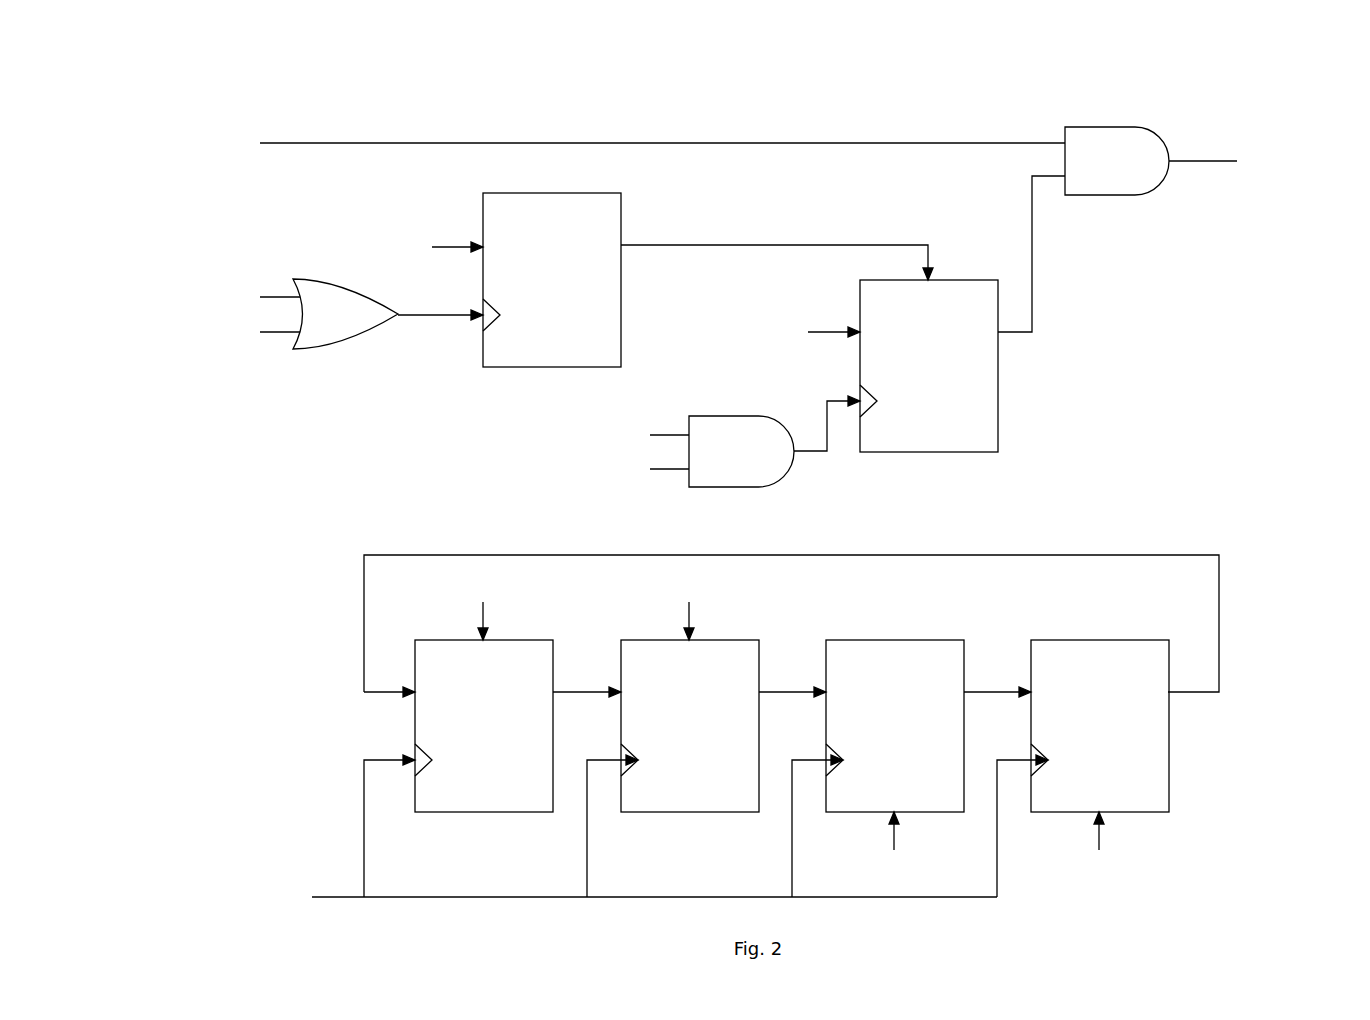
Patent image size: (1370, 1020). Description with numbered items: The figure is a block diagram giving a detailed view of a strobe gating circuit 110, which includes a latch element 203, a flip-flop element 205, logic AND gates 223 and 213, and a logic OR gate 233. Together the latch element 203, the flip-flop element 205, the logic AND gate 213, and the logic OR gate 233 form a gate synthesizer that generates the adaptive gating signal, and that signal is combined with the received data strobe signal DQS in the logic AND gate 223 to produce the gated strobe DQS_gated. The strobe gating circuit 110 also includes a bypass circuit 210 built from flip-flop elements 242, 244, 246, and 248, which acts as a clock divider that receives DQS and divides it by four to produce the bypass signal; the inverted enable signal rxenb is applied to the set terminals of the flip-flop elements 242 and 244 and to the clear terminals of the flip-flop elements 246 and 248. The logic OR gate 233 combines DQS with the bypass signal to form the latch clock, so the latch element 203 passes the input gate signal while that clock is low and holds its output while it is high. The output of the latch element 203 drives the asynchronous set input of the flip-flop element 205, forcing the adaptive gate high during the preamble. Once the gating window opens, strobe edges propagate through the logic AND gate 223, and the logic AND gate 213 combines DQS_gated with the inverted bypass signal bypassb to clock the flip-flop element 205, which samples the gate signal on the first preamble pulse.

The strobe gating circuit 110 is at (1170, 91).
The bypass circuit 210 is at (312, 600).
The logic AND gate 223 is at (1117, 161).
The logic OR gate 233 is at (345, 314).
The latch element 203 is at (552, 280).
The flip-flop element 205 is at (929, 366).
The logic AND gate 213 is at (741, 451).
The flip-flop element 242 is at (484, 726).
The flip-flop element 244 is at (690, 726).
The flip-flop element 246 is at (895, 726).
The flip-flop element 248 is at (1100, 726).